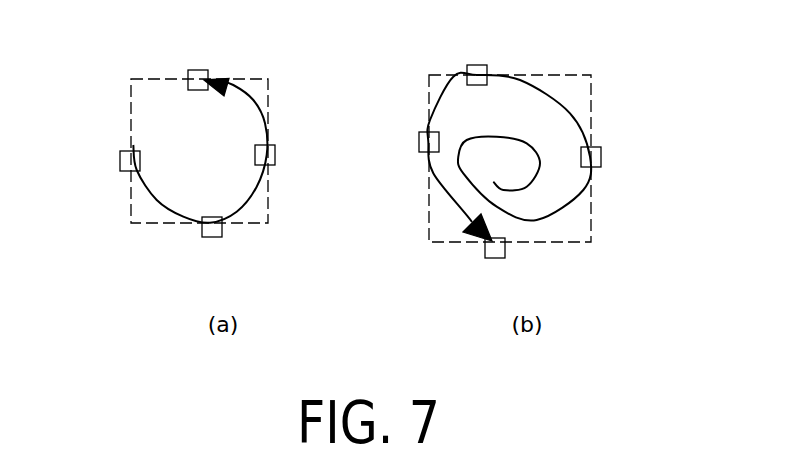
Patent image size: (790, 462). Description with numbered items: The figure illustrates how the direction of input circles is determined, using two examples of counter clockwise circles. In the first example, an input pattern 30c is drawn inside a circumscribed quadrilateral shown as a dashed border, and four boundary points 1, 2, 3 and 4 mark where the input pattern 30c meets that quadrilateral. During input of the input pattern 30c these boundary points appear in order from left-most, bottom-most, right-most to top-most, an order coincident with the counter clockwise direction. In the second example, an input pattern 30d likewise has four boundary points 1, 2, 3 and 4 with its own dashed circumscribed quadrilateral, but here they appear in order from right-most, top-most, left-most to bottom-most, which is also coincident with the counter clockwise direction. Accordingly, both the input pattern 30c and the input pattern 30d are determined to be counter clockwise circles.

The boundary point 1 is at (362, 158).
The boundary point 2 is at (344, 150).
The boundary point 3 is at (347, 141).
The boundary point 4 is at (346, 165).
The input pattern 30c is at (155, 200).
The input pattern 30d is at (573, 110).